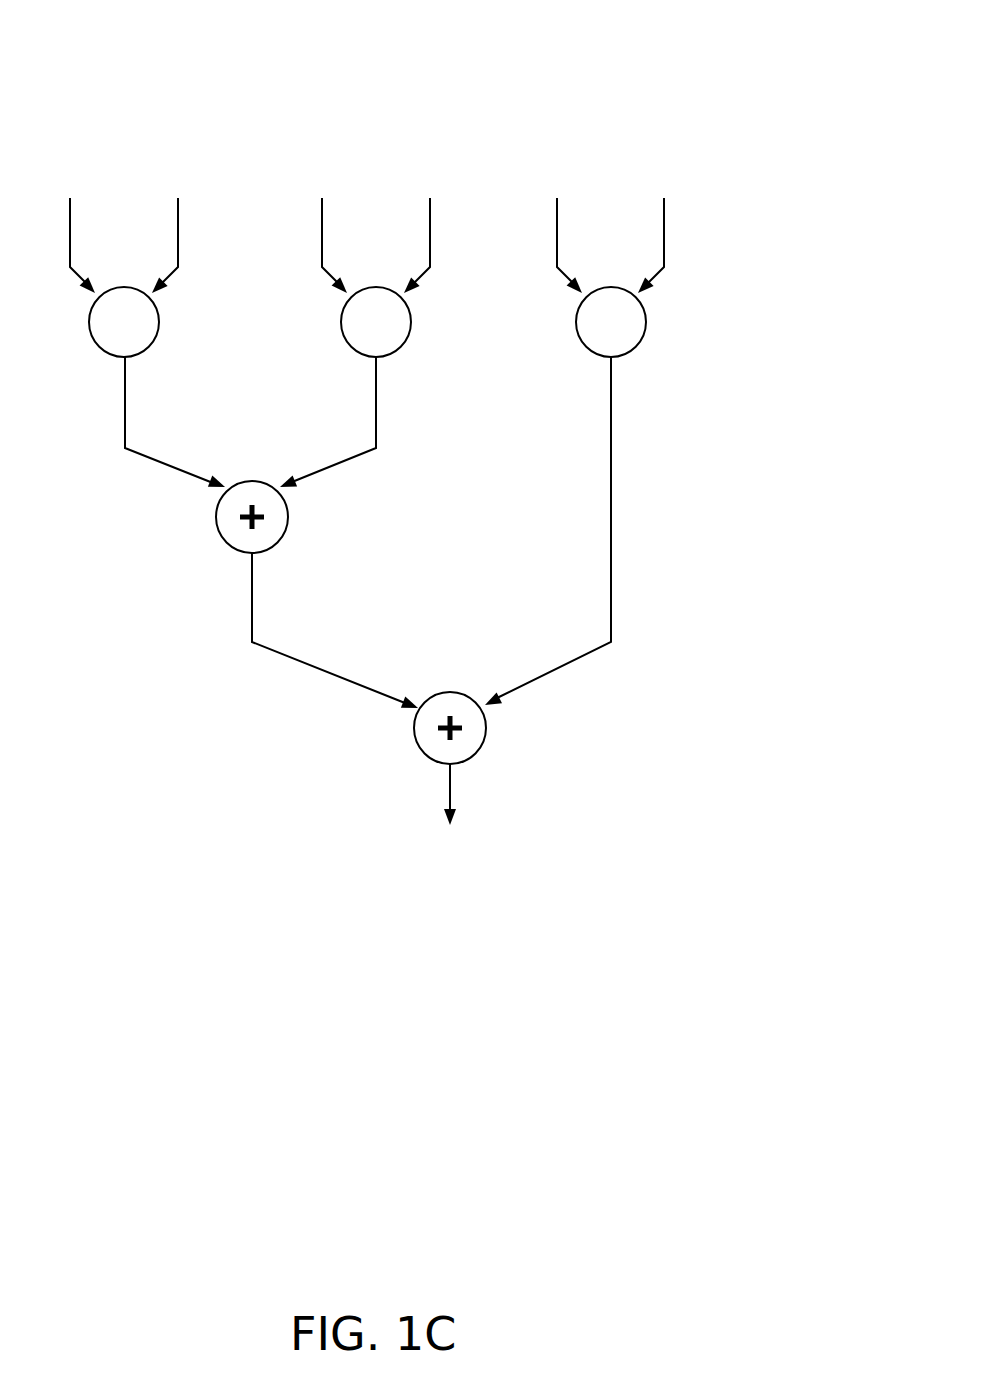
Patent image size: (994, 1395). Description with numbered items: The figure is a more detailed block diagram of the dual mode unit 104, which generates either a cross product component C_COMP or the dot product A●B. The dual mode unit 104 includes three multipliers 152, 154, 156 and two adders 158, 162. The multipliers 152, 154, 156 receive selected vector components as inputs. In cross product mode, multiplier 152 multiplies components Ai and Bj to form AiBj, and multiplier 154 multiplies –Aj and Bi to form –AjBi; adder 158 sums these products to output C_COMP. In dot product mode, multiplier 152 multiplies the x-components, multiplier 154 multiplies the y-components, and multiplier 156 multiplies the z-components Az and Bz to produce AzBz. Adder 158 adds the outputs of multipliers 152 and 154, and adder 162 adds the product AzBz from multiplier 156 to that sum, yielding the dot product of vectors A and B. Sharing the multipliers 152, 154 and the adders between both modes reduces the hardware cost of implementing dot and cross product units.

The dual mode unit 104 is at (560, 55).
The multiplier 152 is at (158, 305).
The multiplier 154 is at (410, 305).
The multiplier 156 is at (645, 305).
The adder 158 is at (252, 481).
The adder 162 is at (450, 692).